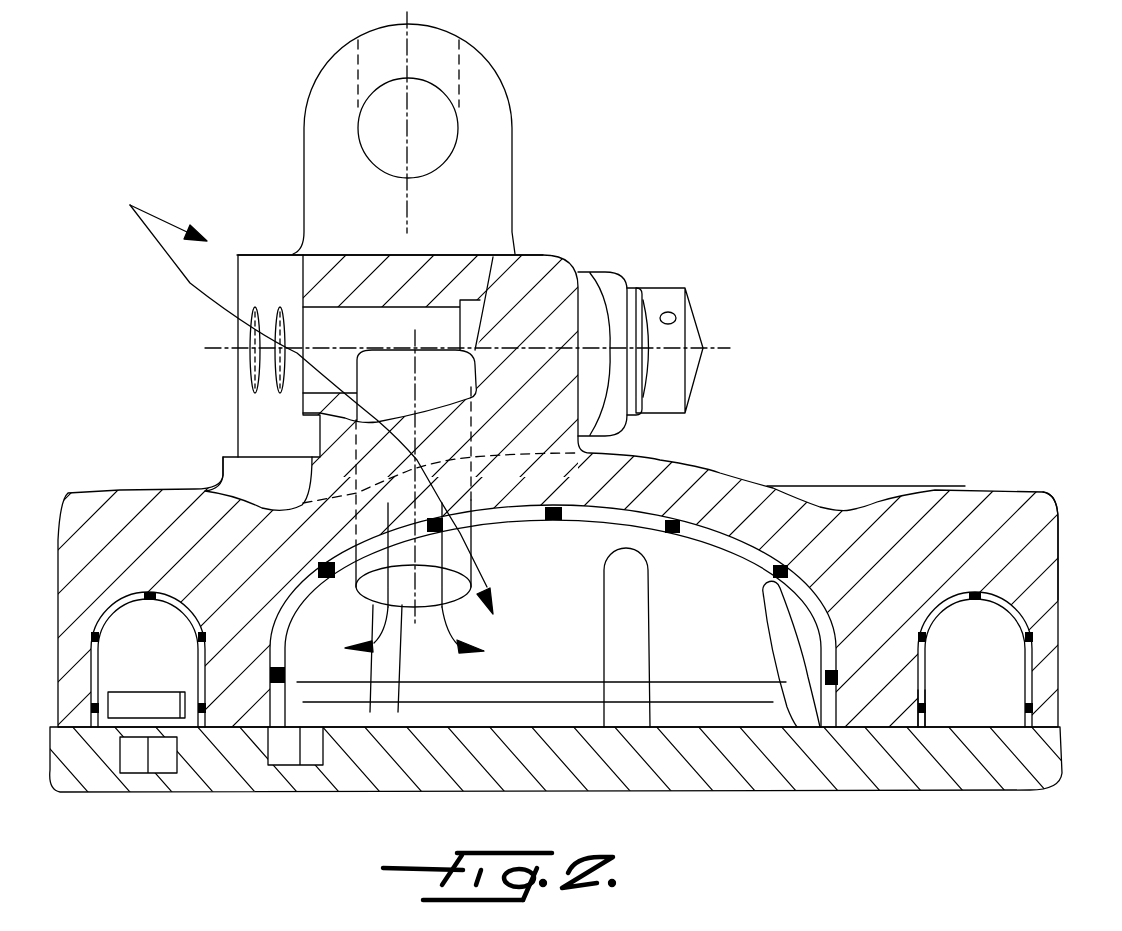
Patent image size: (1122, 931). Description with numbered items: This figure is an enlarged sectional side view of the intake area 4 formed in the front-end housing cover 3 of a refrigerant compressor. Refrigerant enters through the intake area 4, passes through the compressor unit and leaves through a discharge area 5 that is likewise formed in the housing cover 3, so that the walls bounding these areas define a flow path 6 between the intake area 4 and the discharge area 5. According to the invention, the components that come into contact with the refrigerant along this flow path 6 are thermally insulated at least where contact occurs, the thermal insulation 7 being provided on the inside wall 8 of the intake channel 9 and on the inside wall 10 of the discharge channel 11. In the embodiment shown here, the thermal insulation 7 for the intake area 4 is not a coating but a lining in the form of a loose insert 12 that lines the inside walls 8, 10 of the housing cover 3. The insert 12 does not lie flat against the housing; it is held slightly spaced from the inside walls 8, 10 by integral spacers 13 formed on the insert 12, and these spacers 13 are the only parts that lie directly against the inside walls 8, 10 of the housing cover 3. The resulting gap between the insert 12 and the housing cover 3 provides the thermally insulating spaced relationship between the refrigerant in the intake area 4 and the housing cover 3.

The housing cover 3 is at (972, 502).
The intake area 4 is at (540, 670).
The discharge area 5 is at (1043, 453).
The flow path 6 is at (433, 598).
The thermal insulation 7 is at (710, 766).
The inside wall of intake channel 8 is at (830, 690).
The intake channel 9 is at (562, 703).
The inside wall of discharge channel 10 is at (923, 690).
The discharge channel 11 is at (947, 680).
The loose insert 12 is at (327, 812).
The integral spacers 13 is at (773, 575).